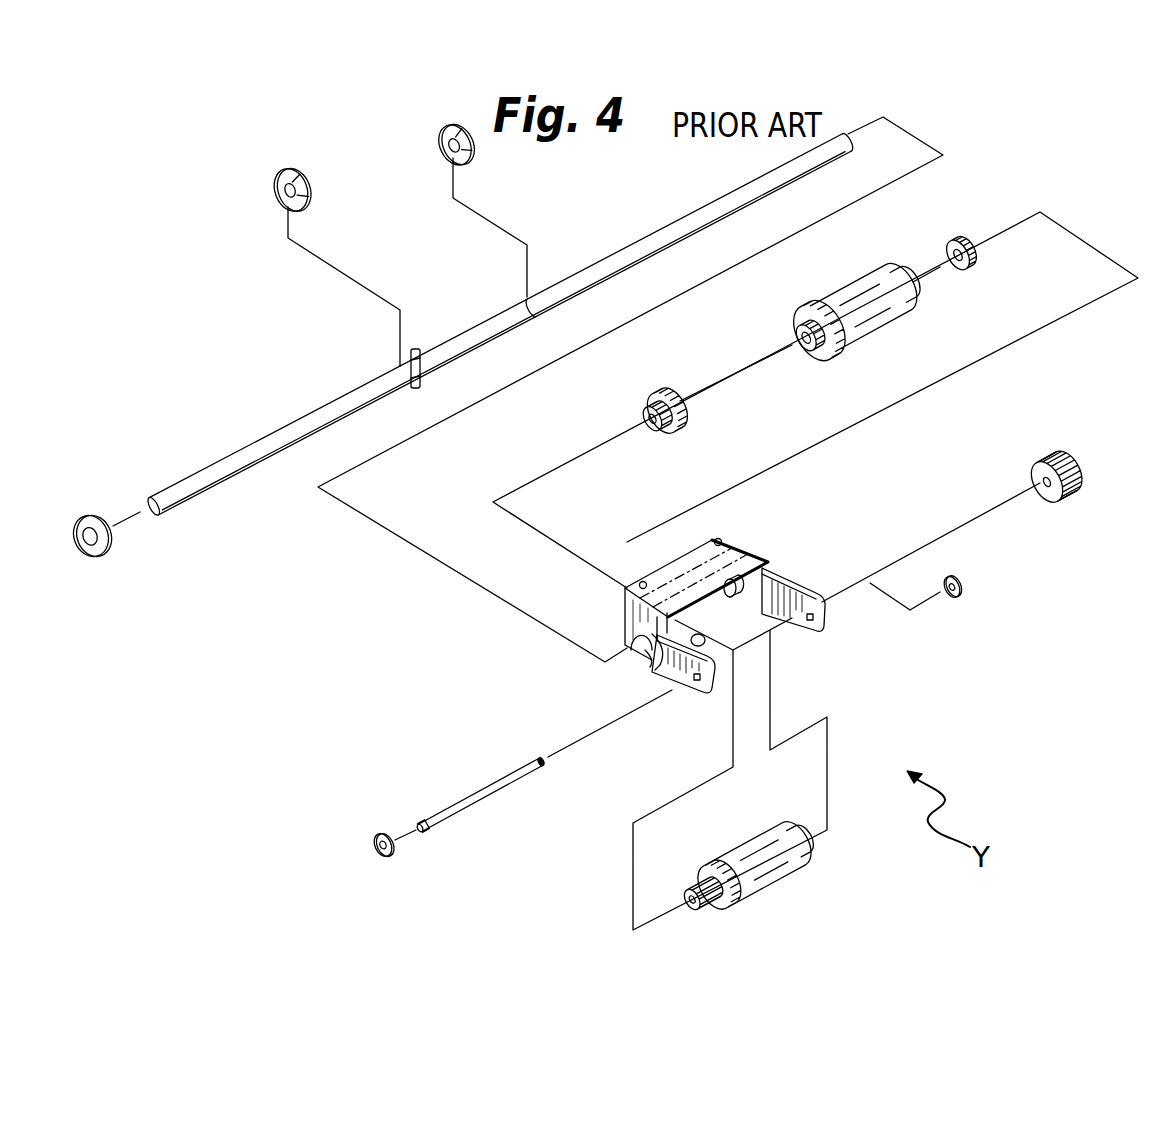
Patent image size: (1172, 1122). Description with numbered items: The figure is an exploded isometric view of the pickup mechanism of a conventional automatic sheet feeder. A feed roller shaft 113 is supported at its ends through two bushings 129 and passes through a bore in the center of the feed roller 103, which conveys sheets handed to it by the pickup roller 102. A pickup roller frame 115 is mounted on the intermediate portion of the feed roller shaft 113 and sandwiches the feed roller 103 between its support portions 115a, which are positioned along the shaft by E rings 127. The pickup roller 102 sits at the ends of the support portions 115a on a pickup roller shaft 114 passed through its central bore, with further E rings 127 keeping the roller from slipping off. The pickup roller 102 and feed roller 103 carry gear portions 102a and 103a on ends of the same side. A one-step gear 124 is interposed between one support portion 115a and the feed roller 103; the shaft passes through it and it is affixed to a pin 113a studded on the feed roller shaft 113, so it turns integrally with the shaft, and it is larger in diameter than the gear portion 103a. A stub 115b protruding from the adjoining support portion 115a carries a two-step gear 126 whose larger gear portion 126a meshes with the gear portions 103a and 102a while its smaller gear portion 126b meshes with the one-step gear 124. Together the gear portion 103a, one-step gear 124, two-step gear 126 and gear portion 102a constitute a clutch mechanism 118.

The pickup roller 102 is at (736, 850).
The gear portion 102a is at (712, 910).
The feed roller 103 is at (832, 299).
The gear portion 103a is at (794, 335).
The feed roller shaft 113 is at (300, 427).
The pin 113a is at (420, 349).
The pickup roller shaft 114 is at (530, 776).
The pickup roller frame 115 is at (689, 562).
The support portions 115a is at (787, 577).
The stub 115b is at (653, 669).
The clutch mechanism 118 is at (1018, 643).
The one-step gear 124 is at (679, 428).
The two-step gear 126 is at (1043, 460).
The gear portion 126a is at (1077, 457).
The gear portion 126b is at (1075, 497).
The E rings 127 is at (271, 185).
The bushings 129 is at (86, 553).